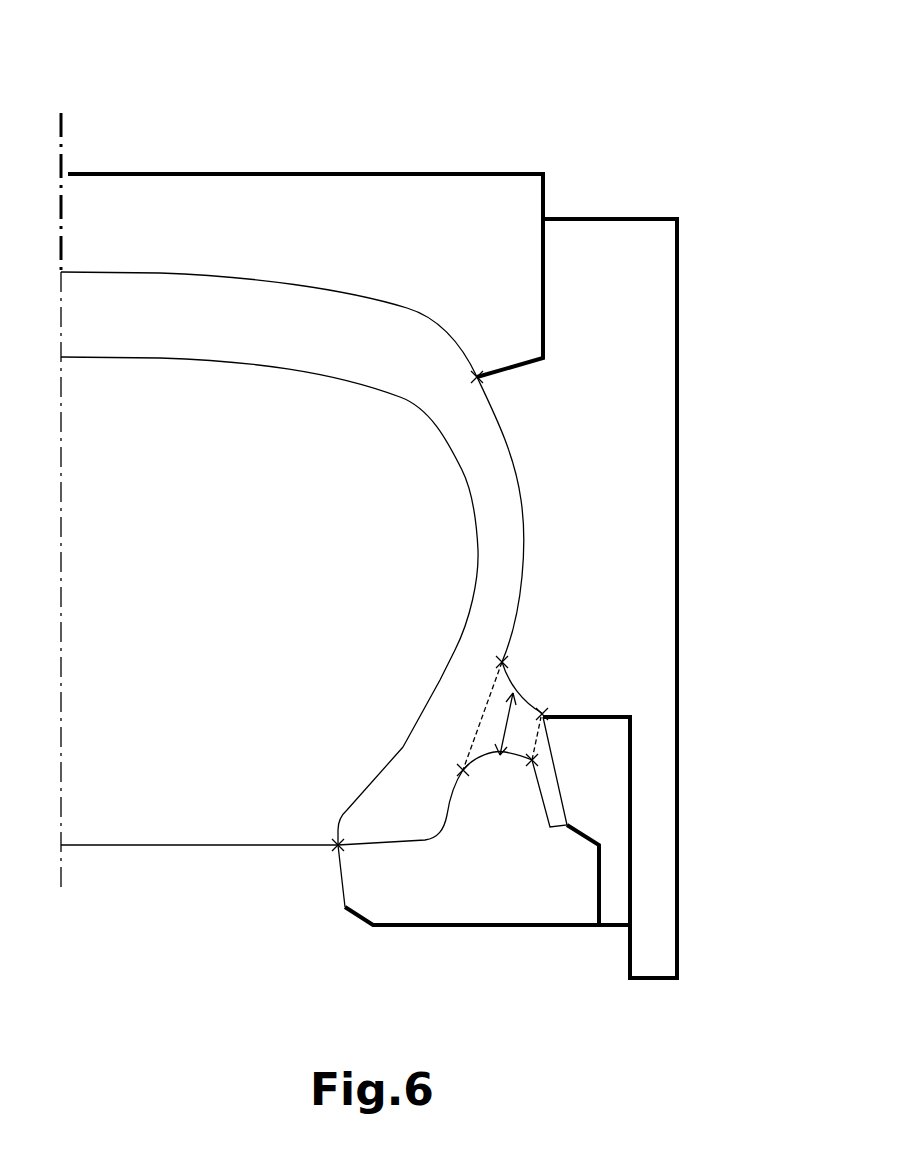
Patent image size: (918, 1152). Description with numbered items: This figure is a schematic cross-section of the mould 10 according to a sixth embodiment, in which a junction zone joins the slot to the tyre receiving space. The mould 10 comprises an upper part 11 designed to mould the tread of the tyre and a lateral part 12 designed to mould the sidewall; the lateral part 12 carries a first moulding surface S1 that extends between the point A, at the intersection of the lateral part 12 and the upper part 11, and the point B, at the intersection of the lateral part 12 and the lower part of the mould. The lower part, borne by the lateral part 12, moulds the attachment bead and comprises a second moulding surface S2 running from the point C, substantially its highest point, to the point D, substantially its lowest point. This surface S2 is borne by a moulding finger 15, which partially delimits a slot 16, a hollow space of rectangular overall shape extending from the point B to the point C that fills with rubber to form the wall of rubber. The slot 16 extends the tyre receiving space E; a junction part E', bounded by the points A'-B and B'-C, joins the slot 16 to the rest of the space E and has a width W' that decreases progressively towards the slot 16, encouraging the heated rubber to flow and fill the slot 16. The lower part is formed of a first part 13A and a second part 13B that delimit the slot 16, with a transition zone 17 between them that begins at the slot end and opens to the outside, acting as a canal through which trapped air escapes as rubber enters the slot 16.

The mould 10 is at (165, 134).
The upper part 11 is at (413, 262).
The lateral part 12 is at (614, 403).
The first part 13A is at (507, 892).
The second part 13B is at (610, 877).
The moulding finger 15 is at (502, 772).
The slot 16 is at (551, 805).
The transition zone 17 is at (601, 858).
The tyre receiving space E is at (292, 509).
The junction part E' is at (589, 649).
The first moulding surface S1 is at (525, 582).
The second moulding surface S2 is at (447, 815).
The width W' is at (520, 724).
The point A is at (482, 359).
The point A' is at (522, 650).
The point B is at (557, 702).
The point B' is at (472, 790).
The point C is at (522, 778).
The point D is at (324, 863).